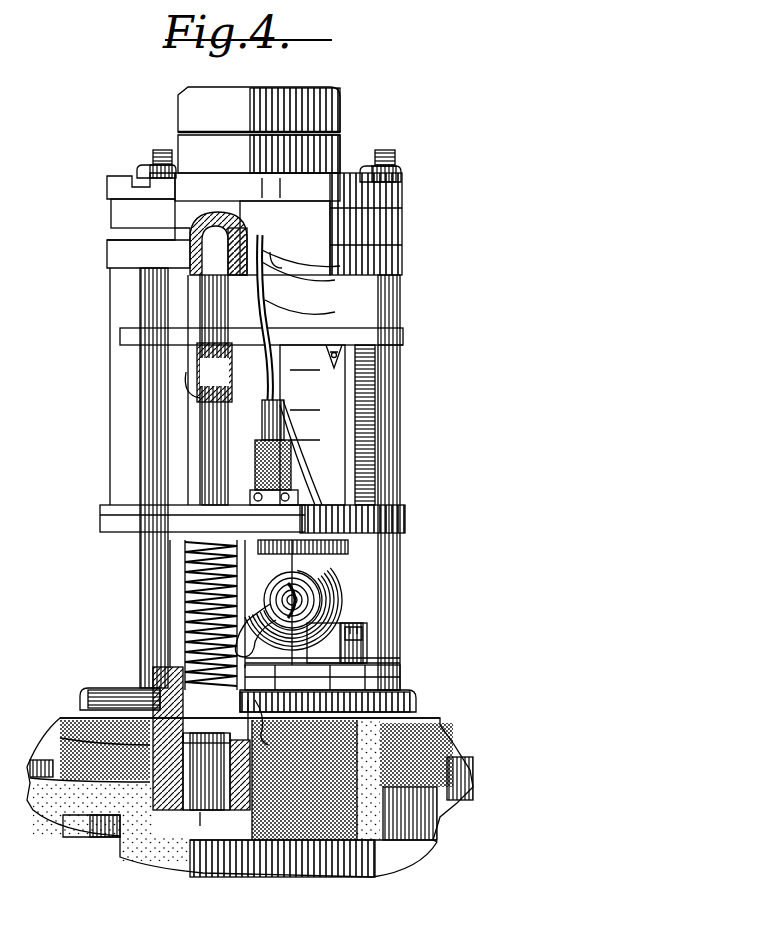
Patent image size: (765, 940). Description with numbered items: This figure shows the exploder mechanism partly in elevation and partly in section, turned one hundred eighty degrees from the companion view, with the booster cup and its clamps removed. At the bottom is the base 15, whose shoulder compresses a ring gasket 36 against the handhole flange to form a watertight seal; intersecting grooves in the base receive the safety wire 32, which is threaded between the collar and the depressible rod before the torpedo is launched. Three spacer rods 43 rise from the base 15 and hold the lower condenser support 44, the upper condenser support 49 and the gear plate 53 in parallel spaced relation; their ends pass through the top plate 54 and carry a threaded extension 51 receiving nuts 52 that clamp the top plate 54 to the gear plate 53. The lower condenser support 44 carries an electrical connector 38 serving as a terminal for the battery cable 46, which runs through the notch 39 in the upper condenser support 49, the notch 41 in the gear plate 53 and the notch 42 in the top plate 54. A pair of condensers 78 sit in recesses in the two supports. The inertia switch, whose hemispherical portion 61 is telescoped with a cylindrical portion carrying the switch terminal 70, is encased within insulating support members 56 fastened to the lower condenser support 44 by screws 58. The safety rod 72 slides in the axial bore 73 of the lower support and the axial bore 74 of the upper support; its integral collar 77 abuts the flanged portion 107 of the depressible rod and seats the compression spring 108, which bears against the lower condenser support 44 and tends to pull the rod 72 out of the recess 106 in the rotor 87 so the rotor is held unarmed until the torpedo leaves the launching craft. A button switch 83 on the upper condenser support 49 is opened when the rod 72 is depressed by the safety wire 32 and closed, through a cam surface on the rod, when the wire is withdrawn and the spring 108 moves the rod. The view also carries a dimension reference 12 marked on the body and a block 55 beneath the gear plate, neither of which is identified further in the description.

The lock body 12 is at (312, 526).
The base 15 is at (284, 874).
The safety wire 32 is at (203, 828).
The ring gasket 36 is at (82, 696).
The electrical connector 38 is at (293, 465).
The notch 39 is at (286, 348).
The notch 41 is at (268, 270).
The notch 42 is at (270, 201).
The spacer rods 43 is at (400, 290).
The lower condenser support 44 is at (405, 535).
The battery cable 46 is at (260, 246).
The upper condenser support 49 is at (403, 340).
The threaded extension 51 is at (158, 150).
The nuts 52 is at (140, 170).
The gear plate 53 is at (111, 215).
The top plate 54 is at (107, 188).
The lower block 55 is at (190, 255).
The insulating support members 56 is at (325, 560).
The screws 58 is at (366, 645).
The hemispherical portion 61 is at (298, 650).
The switch terminal 70 is at (302, 598).
The safety rod 72 is at (208, 310).
The axial bore 73 is at (202, 519).
The axial bore 74 is at (112, 352).
The collar 77 is at (158, 684).
The condensers 78 is at (322, 403).
The button switch 83 is at (208, 372).
The rotor 87 is at (240, 238).
The recess 106 is at (224, 226).
The flanged portion 107 is at (260, 718).
The compression spring 108 is at (185, 576).